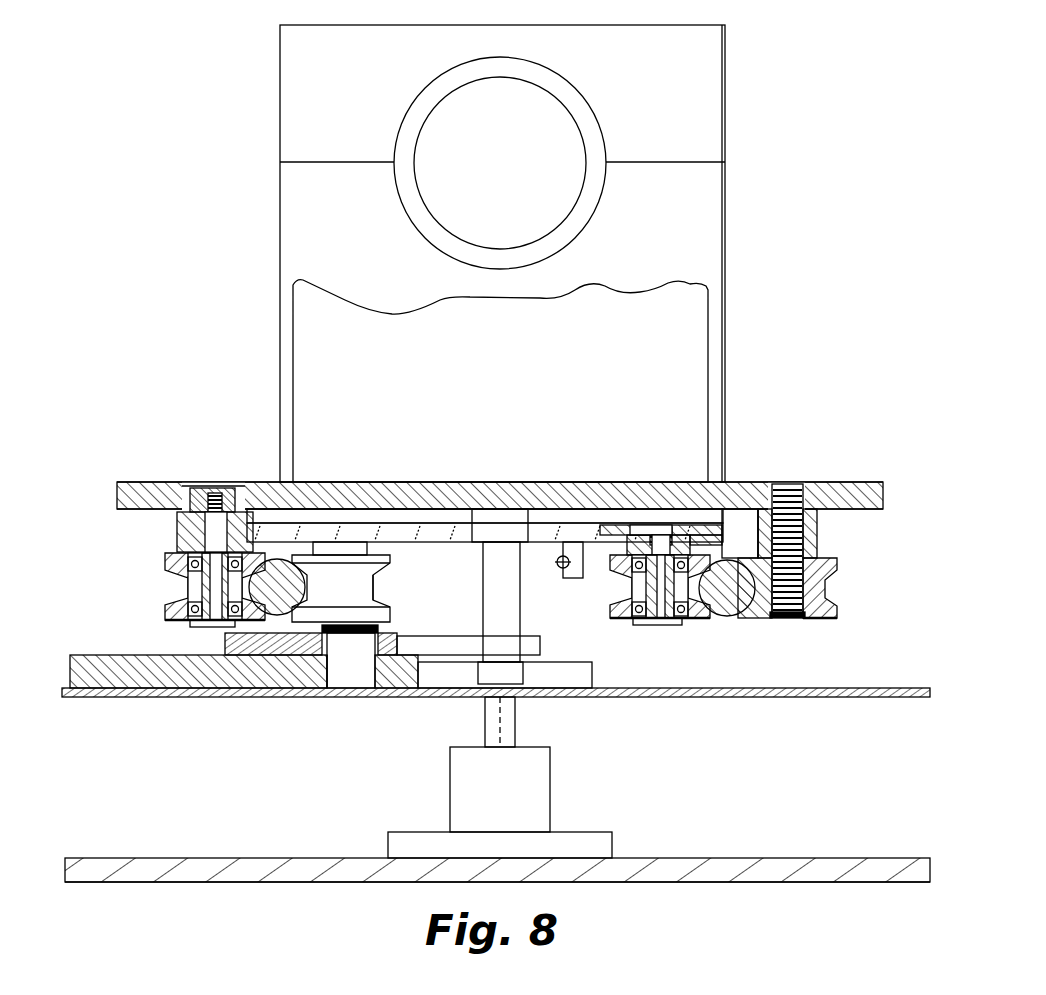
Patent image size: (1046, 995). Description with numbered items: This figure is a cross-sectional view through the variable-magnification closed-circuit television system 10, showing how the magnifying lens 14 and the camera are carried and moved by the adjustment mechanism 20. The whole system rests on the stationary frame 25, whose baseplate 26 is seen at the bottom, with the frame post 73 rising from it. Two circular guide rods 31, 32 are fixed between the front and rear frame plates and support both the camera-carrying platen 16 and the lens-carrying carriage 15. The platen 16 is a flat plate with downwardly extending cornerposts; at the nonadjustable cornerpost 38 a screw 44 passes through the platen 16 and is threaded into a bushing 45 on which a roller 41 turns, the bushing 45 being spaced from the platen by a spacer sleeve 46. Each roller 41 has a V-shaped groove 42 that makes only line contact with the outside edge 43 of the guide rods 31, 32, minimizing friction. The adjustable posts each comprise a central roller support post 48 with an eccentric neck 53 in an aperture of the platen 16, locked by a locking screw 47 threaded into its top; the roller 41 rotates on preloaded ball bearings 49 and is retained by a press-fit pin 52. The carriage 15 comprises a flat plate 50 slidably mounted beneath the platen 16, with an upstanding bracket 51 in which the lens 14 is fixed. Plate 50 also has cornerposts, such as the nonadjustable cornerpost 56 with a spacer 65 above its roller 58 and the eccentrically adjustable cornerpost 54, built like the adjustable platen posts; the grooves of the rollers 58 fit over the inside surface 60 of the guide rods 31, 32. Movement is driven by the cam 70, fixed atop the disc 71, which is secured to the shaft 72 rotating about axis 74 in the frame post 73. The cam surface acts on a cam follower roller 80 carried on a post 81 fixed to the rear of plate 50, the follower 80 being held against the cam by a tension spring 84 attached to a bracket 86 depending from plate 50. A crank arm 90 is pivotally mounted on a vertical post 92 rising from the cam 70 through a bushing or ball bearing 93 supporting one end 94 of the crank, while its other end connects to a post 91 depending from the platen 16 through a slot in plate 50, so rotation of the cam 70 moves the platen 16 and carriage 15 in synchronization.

The variable-magnification closed-circuit television system 10 is at (828, 369).
The magnifying lens 14 is at (500, 163).
The carriage 15 is at (430, 528).
The platen 16 is at (884, 494).
The adjustment mechanism 20 is at (636, 667).
The frame 25 is at (192, 875).
The baseplate 26 is at (283, 877).
The guide rod 31 is at (725, 608).
The guide rod 32 is at (300, 587).
The cornerpost 38 is at (840, 531).
The roller 41 is at (182, 600).
The V-shaped groove 42 is at (180, 578).
The outside edge 43 is at (752, 620).
The screw 44 is at (792, 492).
The bushing 45 is at (808, 618).
The spacer sleeve 46 is at (820, 546).
The locking screw 47 is at (212, 484).
The roller support post 48 is at (178, 528).
The ball bearings 49 is at (186, 564).
The plate 50 is at (455, 530).
The bracket 51 is at (710, 236).
The press-fit pin 52 is at (215, 628).
The eccentric neck 53 is at (242, 486).
The cornerpost 54 is at (599, 614).
The cornerpost 56 is at (334, 548).
The roller 58 is at (392, 617).
The inside surface 60 is at (722, 570).
The spacer 65 is at (390, 557).
The cam 70 is at (276, 676).
The disc 71 is at (180, 698).
The shaft 72 is at (497, 745).
The frame post 73 is at (548, 804).
The axis 74 is at (498, 705).
The cam follower roller 80 is at (515, 672).
The post 81 is at (505, 612).
The tension spring 84 is at (558, 556).
The bracket 86 is at (577, 545).
The crank arm 90 is at (438, 640).
The post 91 is at (498, 516).
The vertical post 92 is at (330, 690).
The bushing or ball bearing 93 is at (332, 648).
The end of the crank 94 is at (380, 680).